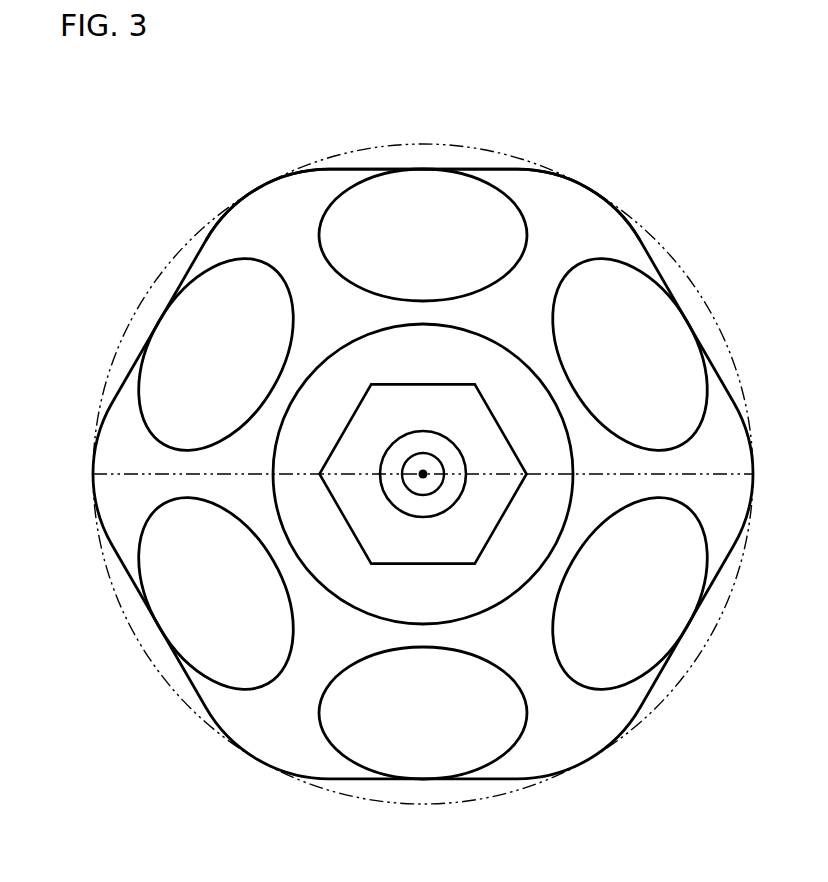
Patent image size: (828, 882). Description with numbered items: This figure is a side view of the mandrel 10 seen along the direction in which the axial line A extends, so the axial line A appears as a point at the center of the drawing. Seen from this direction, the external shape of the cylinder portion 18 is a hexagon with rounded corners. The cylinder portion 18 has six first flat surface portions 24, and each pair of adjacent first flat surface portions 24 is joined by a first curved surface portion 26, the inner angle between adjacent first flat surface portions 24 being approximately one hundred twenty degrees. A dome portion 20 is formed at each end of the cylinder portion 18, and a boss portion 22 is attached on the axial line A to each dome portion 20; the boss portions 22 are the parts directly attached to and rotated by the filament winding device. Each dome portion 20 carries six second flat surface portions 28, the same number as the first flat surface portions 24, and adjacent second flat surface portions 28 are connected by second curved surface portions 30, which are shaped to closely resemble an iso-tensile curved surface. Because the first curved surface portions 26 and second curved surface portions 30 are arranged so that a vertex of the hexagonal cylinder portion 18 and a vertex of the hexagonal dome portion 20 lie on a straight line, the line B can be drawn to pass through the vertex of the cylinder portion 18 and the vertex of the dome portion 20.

The mandrel 10 is at (104, 136).
The cylinder portion 18 is at (463, 167).
The dome portion 20 is at (582, 221).
The boss portion 22 is at (425, 507).
The first flat surface portion 24 is at (360, 168).
The first curved surface portion 26 is at (257, 187).
The second flat surface portion 28 is at (420, 193).
The second curved surface portion 30 is at (555, 193).
The axial line A is at (424, 472).
The line B is at (120, 473).